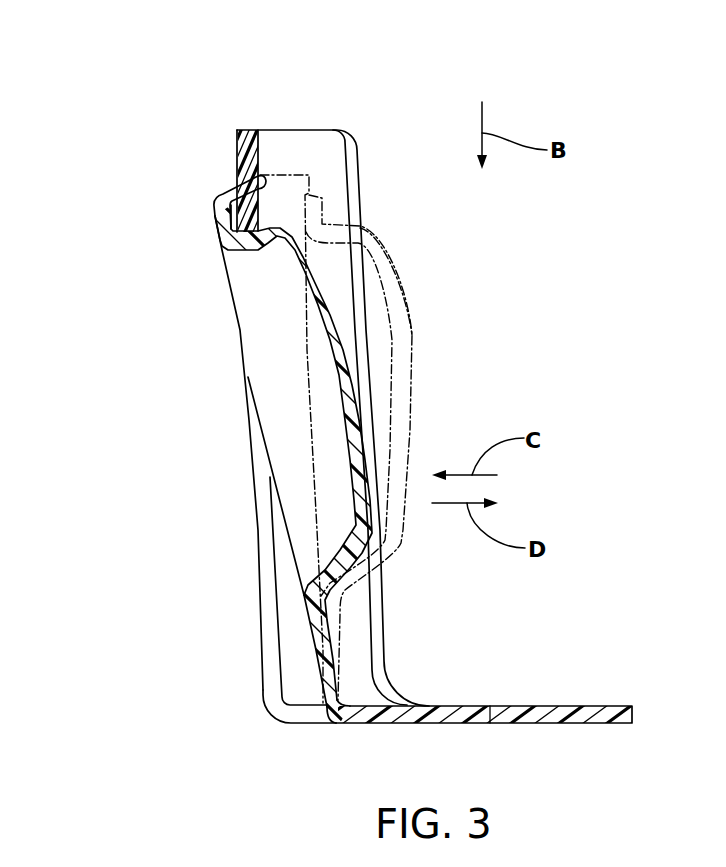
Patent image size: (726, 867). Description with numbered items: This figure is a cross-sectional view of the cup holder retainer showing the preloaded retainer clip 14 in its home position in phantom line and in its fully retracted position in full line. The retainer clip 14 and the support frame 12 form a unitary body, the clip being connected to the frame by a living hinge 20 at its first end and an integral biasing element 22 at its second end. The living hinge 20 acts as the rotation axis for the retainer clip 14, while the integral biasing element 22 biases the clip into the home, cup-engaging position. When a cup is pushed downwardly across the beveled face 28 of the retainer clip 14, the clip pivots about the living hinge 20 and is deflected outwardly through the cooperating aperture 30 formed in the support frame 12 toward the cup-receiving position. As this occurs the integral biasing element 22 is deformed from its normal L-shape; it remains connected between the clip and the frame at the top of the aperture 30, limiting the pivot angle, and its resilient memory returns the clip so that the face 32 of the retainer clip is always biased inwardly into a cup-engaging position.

The support frame 12 is at (343, 140).
The preloaded retainer clip 14 is at (350, 393).
The living hinge 20 is at (330, 720).
The integral biasing element 22 is at (240, 186).
The beveled face 28 is at (310, 267).
The cooperating aperture 30 is at (263, 568).
The face 32 is at (412, 418).